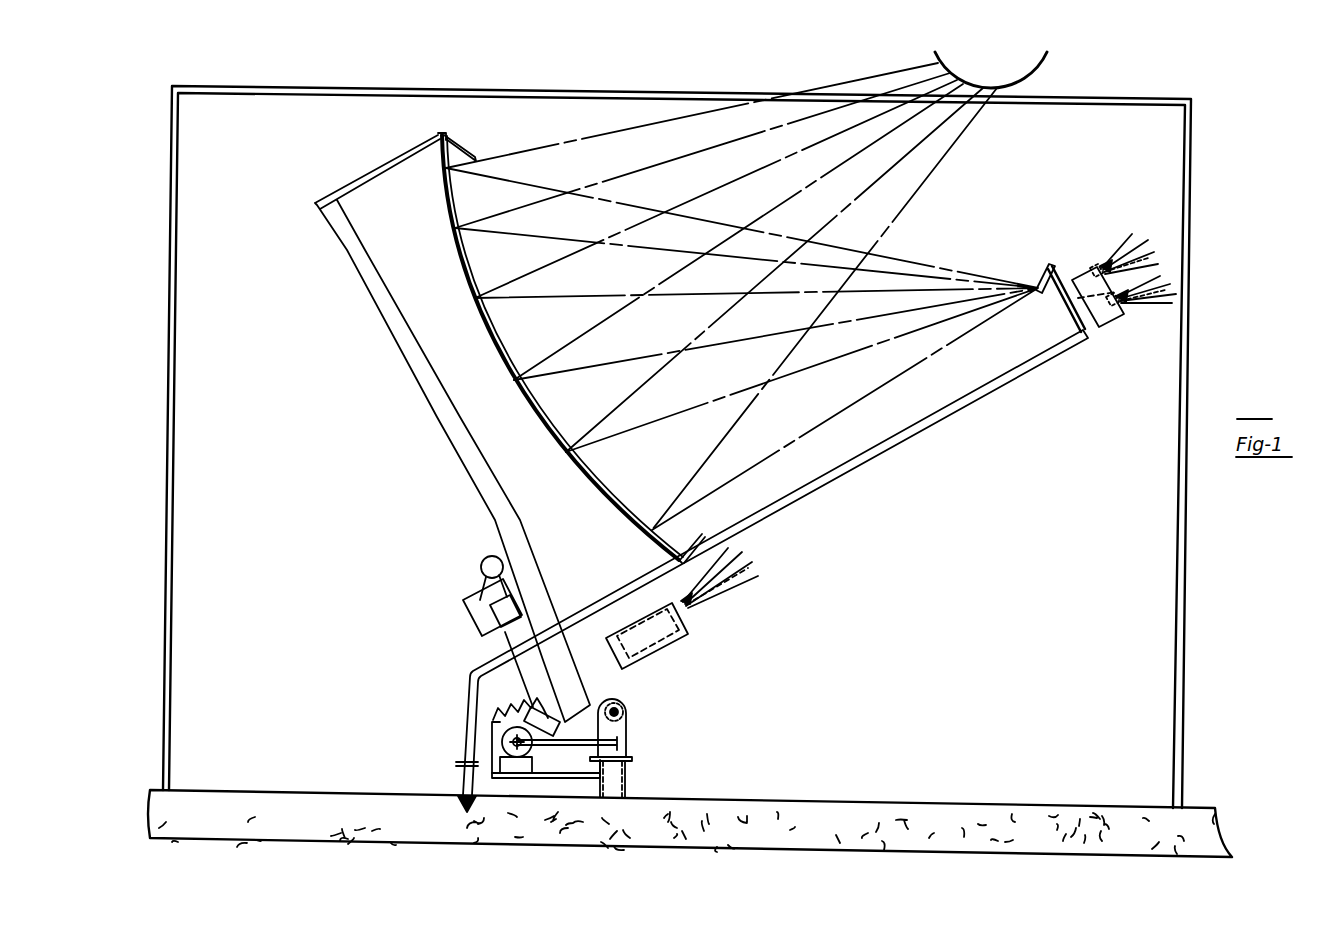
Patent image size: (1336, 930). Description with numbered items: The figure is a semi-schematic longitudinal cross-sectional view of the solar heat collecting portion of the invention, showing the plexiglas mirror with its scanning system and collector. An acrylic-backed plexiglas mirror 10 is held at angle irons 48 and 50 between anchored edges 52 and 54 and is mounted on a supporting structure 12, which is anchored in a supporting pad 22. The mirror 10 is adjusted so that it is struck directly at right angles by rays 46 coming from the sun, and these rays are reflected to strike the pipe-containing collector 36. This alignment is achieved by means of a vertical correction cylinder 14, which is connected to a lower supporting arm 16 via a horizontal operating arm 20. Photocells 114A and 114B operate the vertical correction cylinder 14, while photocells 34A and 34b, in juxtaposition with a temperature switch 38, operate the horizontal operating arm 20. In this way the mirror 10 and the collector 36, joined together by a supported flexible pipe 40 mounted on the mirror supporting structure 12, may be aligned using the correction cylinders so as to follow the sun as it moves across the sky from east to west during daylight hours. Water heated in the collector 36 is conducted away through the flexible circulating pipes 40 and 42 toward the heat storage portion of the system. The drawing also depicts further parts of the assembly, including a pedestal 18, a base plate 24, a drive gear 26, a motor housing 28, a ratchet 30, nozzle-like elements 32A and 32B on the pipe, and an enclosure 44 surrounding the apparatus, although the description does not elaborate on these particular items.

The plexiglas mirror 10 is at (483, 345).
The supporting structure 12 is at (380, 330).
The vertical correction cylinder 14 is at (488, 651).
The lower supporting arm 16 is at (630, 730).
The pedestal 18 is at (630, 790).
The horizontal operating arm 20 is at (640, 760).
The supporting pad 22 is at (890, 803).
The base plate 24 is at (565, 786).
The drive gear 26 is at (530, 750).
The motor housing 28 is at (490, 736).
The ratchet 30 is at (508, 700).
The spray nozzle 32A is at (684, 607).
The receiver unit 32B is at (682, 628).
The photocell 34A is at (1088, 270).
The photocell 34b is at (1112, 318).
The pipe-containing collector 36 is at (1043, 270).
The temperature switch 38 is at (1085, 302).
The flexible pipe 40 is at (880, 452).
The flexible circulating pipe 42 is at (476, 802).
The enclosure 44 is at (167, 362).
The rays 46 is at (822, 83).
The angle iron 48 is at (440, 136).
The angle iron 50 is at (674, 557).
The anchored edge 52 is at (458, 148).
The anchored edge 54 is at (694, 534).
The photocell 114A is at (488, 620).
The photocell 114B is at (548, 708).